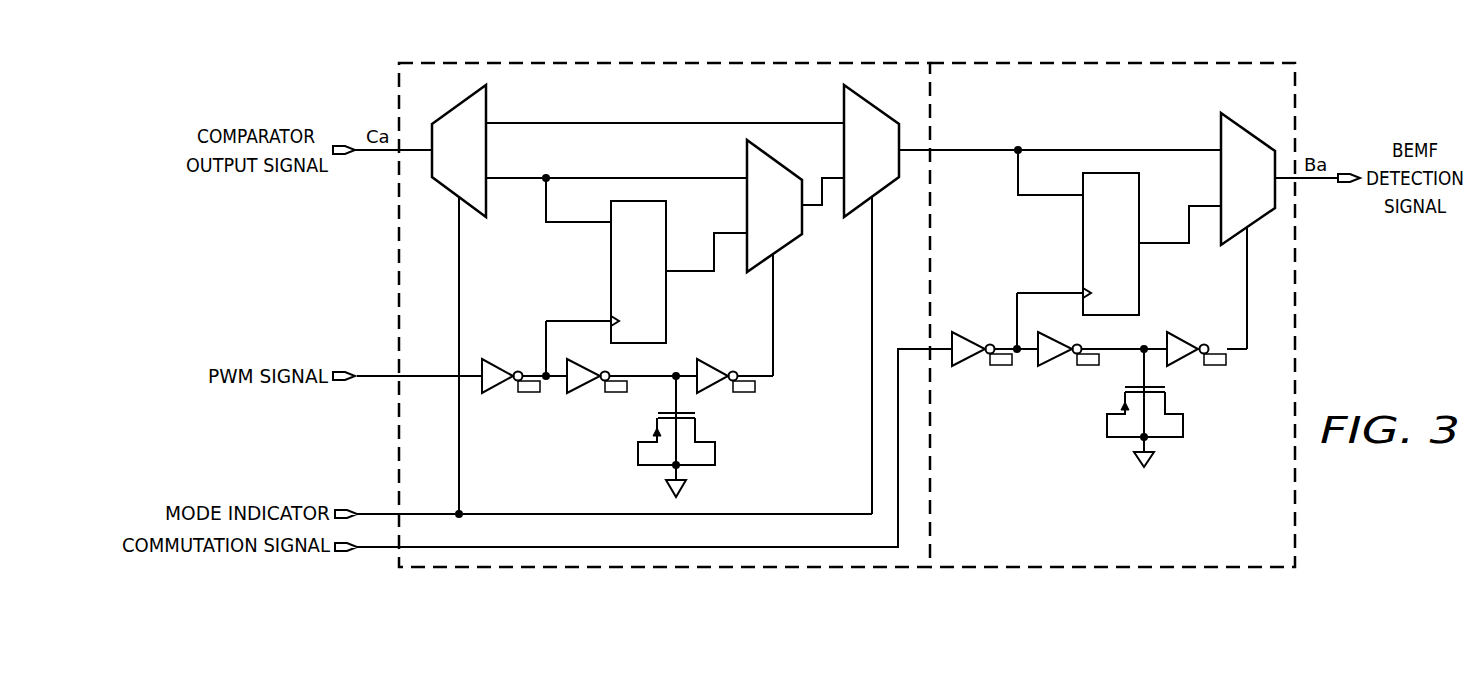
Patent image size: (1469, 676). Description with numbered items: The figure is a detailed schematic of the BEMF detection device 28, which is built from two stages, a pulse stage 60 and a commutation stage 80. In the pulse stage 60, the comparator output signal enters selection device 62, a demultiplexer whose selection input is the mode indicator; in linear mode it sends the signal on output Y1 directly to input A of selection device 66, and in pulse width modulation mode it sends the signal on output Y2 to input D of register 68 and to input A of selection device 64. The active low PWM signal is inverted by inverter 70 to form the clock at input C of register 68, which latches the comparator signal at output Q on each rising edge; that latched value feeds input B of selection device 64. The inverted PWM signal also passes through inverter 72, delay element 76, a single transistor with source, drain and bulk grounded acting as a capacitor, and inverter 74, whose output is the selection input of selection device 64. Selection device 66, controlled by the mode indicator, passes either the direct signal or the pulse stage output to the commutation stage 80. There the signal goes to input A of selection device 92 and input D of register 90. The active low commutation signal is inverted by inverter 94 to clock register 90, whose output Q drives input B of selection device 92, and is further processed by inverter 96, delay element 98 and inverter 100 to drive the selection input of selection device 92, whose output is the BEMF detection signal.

The BEMF detection device 28 is at (1392, 295).
The pulse stage 60 is at (680, 101).
The selection device 62 is at (448, 194).
The selection device 64 is at (786, 250).
The selection device 66 is at (884, 193).
The register 68 is at (651, 282).
The inverter 70 is at (500, 366).
The inverter 72 is at (584, 388).
The inverter 74 is at (712, 366).
The delay element 76 is at (697, 431).
The commutation stage 80 is at (1120, 531).
The register 90 is at (1125, 256).
The selection device 92 is at (1246, 127).
The inverter 94 is at (971, 337).
The inverter 96 is at (1054, 360).
The delay element 98 is at (1165, 402).
The inverter 100 is at (1183, 337).